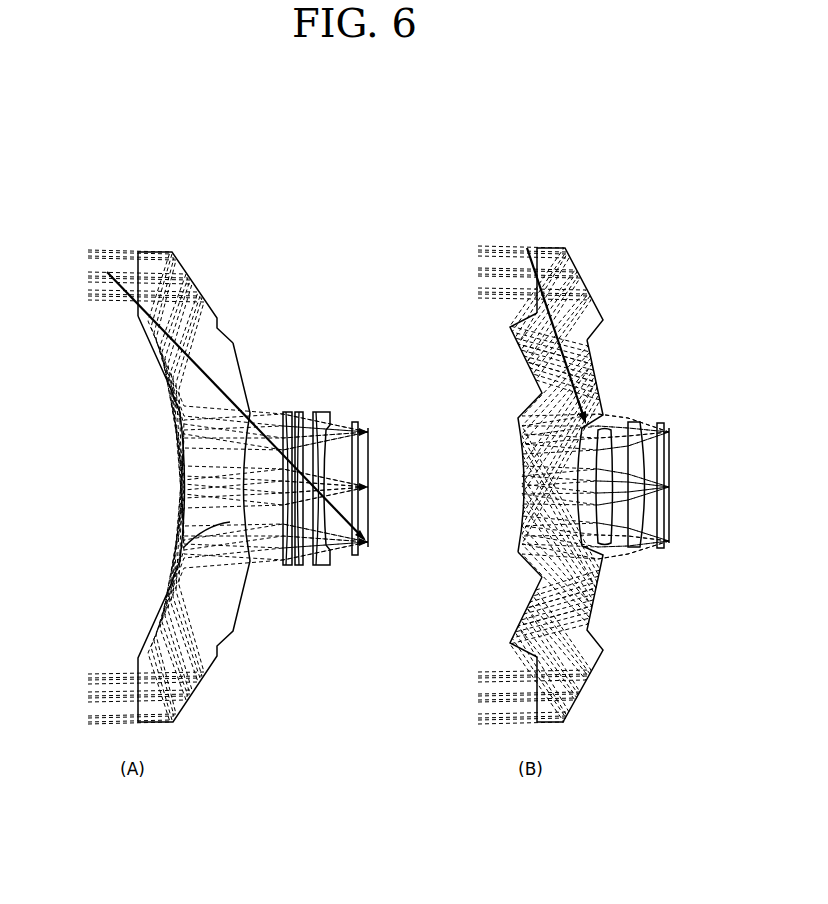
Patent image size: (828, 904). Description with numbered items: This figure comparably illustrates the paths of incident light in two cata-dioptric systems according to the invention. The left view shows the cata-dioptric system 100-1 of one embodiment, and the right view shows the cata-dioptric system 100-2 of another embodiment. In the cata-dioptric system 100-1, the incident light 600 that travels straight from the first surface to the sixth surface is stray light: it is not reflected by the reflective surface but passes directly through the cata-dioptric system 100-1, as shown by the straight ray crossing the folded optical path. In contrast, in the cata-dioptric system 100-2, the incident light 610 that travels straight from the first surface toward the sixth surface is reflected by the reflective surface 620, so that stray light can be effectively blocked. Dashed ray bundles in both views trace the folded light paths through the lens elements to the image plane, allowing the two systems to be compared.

The incident light 600 is at (107, 272).
The incident light 610 is at (524, 256).
The reflective surface 620 is at (590, 422).
The cata-dioptric system 100-1 is at (125, 492).
The cata-dioptric system 100-2 is at (500, 492).